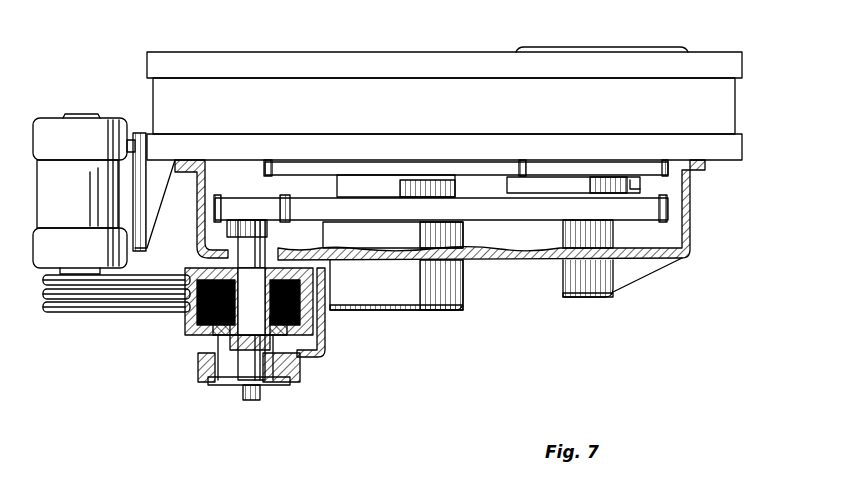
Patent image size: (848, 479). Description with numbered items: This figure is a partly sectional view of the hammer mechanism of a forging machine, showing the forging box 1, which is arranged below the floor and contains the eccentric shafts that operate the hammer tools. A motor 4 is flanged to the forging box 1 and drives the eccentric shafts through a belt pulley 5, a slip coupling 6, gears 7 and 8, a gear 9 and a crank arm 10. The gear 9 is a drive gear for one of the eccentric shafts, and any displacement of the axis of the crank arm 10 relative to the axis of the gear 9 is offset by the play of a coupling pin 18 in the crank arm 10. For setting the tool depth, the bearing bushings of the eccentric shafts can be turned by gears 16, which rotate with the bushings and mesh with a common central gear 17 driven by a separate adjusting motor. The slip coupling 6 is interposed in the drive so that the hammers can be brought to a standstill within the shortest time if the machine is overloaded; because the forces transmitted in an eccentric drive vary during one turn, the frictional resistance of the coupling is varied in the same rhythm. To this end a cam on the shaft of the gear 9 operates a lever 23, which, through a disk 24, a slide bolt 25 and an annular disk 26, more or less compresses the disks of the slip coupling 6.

The forging box 1 is at (193, 93).
The motor 4 is at (55, 130).
The belt pulley 5 is at (325, 322).
The slip coupling 6 is at (185, 320).
The gear 7 is at (233, 207).
The gear 8 is at (487, 213).
The gear 9 is at (648, 213).
The crank arm 10 is at (640, 189).
The gear 16 is at (606, 160).
The central gear 17 is at (452, 160).
The coupling pin 18 is at (527, 195).
The lever 23 is at (265, 393).
The disk 24 is at (240, 386).
The slide bolt 25 is at (215, 386).
The annular disk 26 is at (305, 355).